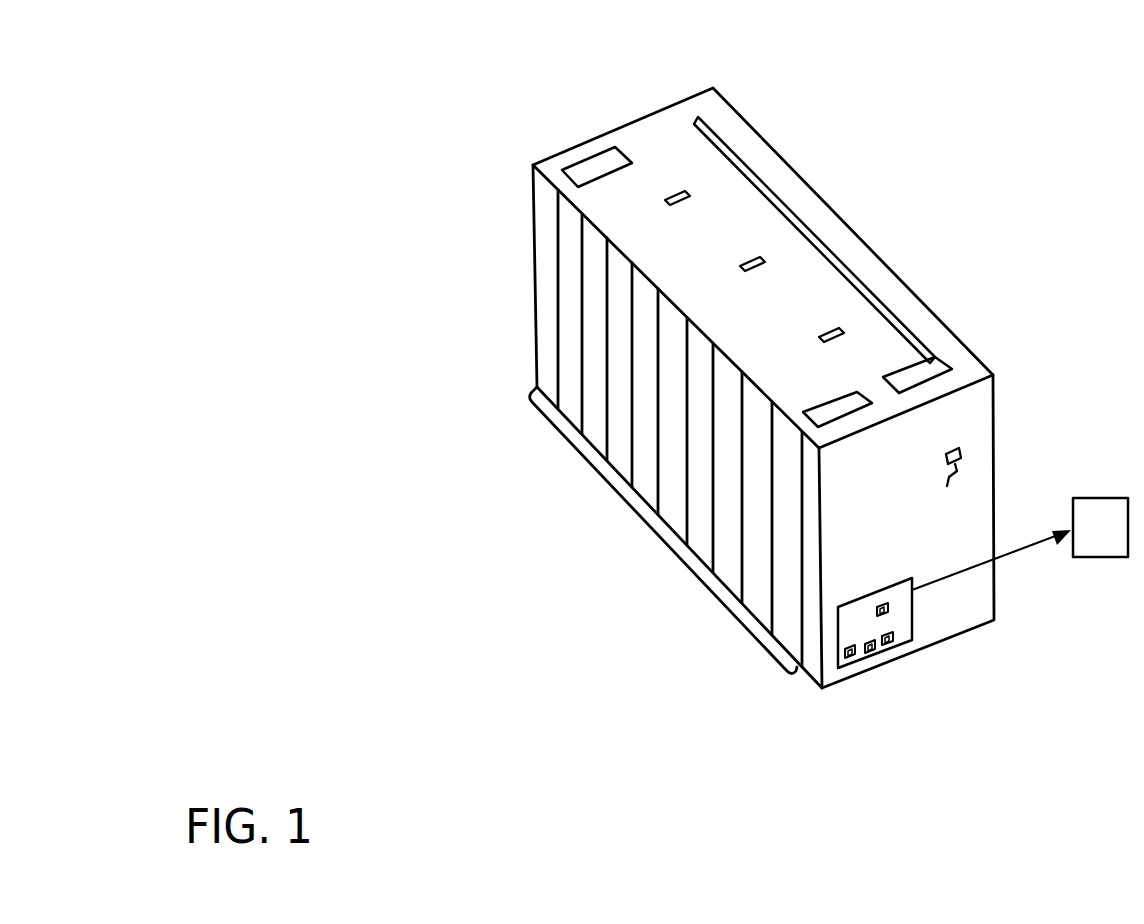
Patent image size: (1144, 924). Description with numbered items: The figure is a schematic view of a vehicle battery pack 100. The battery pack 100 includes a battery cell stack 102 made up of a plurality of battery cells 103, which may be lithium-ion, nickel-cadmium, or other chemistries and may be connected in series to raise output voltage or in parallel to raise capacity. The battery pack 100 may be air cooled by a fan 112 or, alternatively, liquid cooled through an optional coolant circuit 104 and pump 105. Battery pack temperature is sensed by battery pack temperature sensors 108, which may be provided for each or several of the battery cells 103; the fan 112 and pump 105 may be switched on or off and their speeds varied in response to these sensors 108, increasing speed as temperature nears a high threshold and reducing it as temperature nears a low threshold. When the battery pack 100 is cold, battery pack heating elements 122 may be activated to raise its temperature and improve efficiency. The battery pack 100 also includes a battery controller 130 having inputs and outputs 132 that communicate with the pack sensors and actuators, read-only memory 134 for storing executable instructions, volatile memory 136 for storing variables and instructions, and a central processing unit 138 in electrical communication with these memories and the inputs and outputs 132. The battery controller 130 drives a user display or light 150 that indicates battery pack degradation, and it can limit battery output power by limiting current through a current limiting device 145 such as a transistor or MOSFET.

The battery pack 100 is at (434, 66).
The battery cell stack 102 is at (652, 532).
The battery cells 103 is at (594, 315).
The coolant circuit 104 is at (872, 291).
The pump 105 is at (912, 364).
The battery pack temperature sensors 108 is at (672, 189).
The battery fan 112 is at (835, 398).
The battery pack heating elements 122 is at (596, 156).
The battery controller 130 is at (897, 580).
The inputs and outputs 132 is at (853, 659).
The read-only memory 134 is at (875, 649).
The volatile memory 136 is at (895, 641).
The central processing unit 138 is at (890, 606).
The current limiting device 145 is at (941, 480).
The user display or light 150 is at (1121, 543).